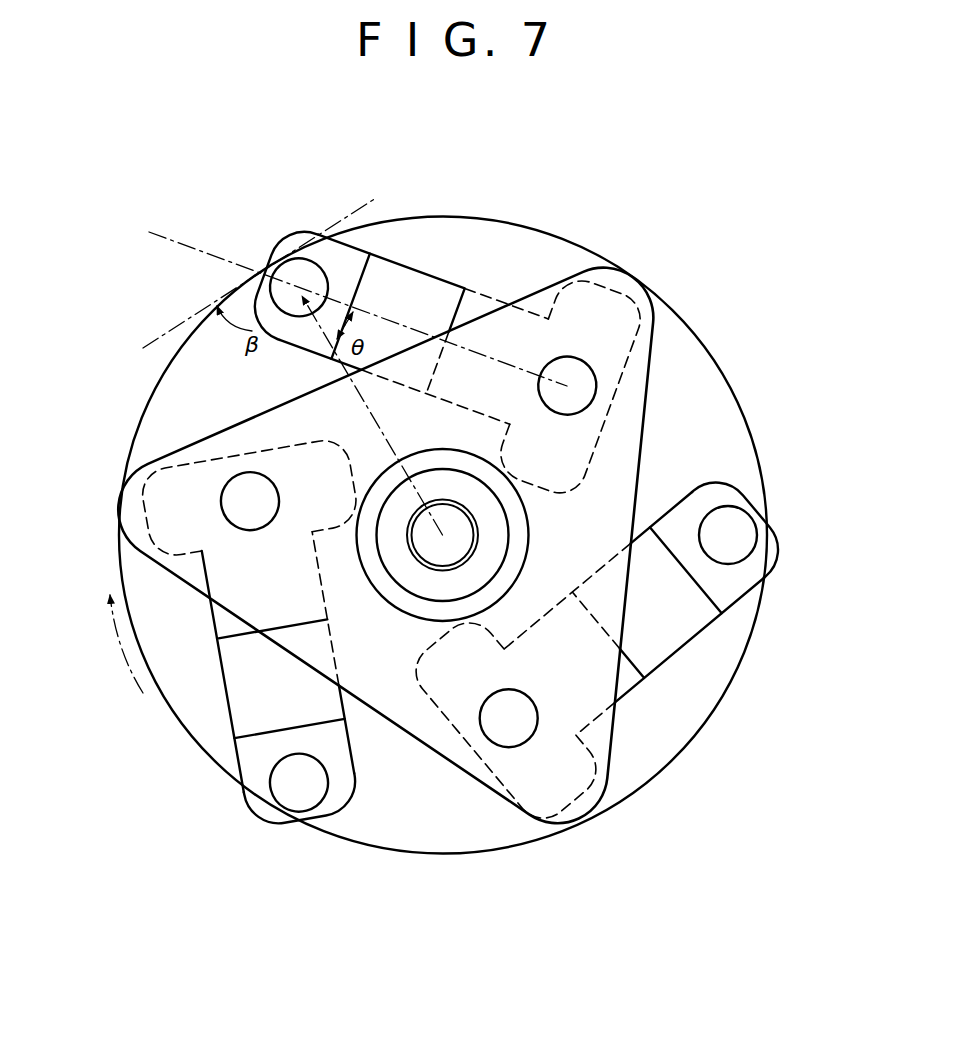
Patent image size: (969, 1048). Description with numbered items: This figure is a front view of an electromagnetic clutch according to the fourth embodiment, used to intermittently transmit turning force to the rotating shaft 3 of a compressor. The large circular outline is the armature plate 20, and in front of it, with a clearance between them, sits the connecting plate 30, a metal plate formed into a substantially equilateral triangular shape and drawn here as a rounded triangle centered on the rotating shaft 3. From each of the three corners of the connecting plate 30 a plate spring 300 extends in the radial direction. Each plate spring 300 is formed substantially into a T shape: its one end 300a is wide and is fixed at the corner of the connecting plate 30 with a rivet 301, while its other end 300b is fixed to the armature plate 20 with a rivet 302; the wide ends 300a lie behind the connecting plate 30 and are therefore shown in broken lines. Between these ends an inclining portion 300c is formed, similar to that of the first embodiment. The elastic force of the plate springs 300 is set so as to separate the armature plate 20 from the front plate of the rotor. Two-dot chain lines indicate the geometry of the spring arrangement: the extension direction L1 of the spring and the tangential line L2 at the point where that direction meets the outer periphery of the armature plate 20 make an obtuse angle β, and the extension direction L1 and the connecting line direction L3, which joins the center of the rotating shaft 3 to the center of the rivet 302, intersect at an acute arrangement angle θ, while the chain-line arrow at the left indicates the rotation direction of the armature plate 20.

The rotating shaft 3 is at (460, 542).
The armature plate 20 is at (704, 698).
The connecting plate 30 is at (487, 782).
The plate spring 300 is at (460, 537).
The one end of plate spring 300a is at (602, 307).
The other end of plate spring 300b is at (301, 257).
The inclining portion 300c is at (433, 268).
The rivet 301 is at (583, 390).
The rivet 302 is at (300, 316).
The extension direction L1 is at (210, 258).
The tangential line L2 is at (157, 338).
The connecting line direction L3 is at (373, 424).